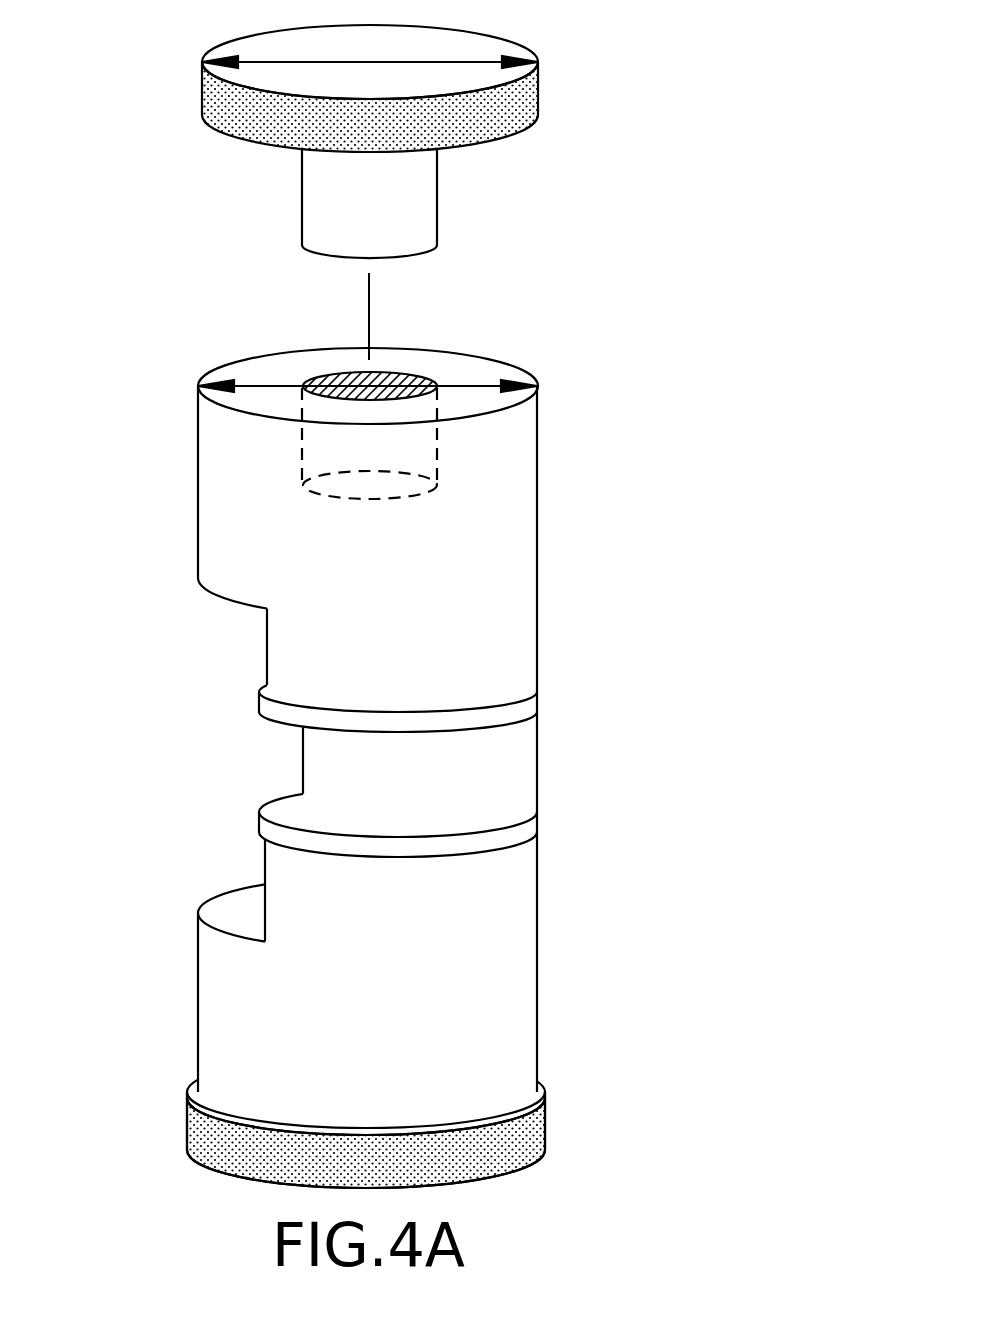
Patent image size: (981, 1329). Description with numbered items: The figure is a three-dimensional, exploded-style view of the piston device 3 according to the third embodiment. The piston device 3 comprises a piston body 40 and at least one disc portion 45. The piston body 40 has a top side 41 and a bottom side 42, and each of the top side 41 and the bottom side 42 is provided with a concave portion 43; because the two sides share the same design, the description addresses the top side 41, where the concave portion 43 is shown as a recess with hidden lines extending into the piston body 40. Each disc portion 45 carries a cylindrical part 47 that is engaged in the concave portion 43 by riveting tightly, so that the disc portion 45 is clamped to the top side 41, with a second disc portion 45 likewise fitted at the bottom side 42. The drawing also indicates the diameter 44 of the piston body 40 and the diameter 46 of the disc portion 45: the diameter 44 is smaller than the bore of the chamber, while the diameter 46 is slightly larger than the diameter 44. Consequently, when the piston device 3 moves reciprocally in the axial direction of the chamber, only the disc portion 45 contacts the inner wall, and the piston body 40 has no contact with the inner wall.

The piston device 3 is at (120, 1163).
The piston body 40 is at (383, 701).
The top side 41 is at (493, 398).
The bottom side 42 is at (493, 1118).
The concave portion 43 is at (298, 453).
The diameter of the piston body 44 is at (467, 388).
The disc portion 45 is at (200, 98).
The diameter of the disc portion 46 is at (495, 60).
The cylindrical part 47 is at (298, 195).